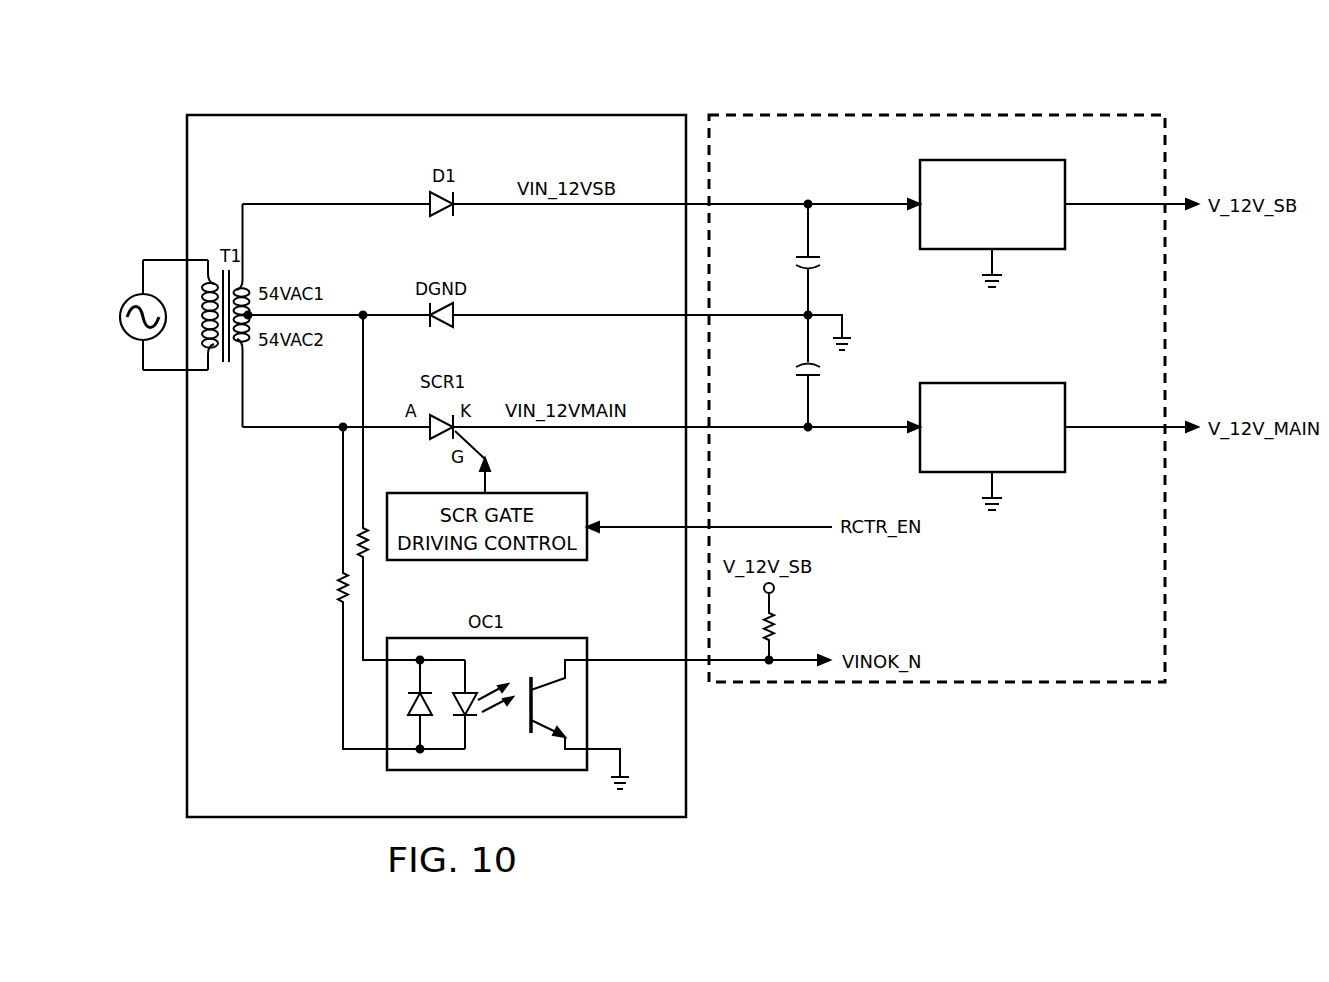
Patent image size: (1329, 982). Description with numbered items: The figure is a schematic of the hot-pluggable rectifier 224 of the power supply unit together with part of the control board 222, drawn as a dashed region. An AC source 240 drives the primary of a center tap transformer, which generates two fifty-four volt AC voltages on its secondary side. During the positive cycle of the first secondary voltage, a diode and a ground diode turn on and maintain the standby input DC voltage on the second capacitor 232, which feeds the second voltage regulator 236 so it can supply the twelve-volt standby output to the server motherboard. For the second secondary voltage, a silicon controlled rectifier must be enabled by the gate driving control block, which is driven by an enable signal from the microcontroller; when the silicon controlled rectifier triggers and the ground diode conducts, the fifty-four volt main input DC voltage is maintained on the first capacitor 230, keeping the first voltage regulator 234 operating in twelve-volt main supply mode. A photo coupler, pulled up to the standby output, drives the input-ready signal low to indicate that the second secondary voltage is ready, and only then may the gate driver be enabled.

The hot-pluggable rectifier 224 is at (341, 112).
The control board 222 is at (1005, 111).
The AC source 240 is at (128, 295).
The second capacitor 232 is at (820, 260).
The first capacitor 230 is at (820, 370).
The second voltage regulator 236 is at (1078, 172).
The first voltage regulator 234 is at (1078, 395).